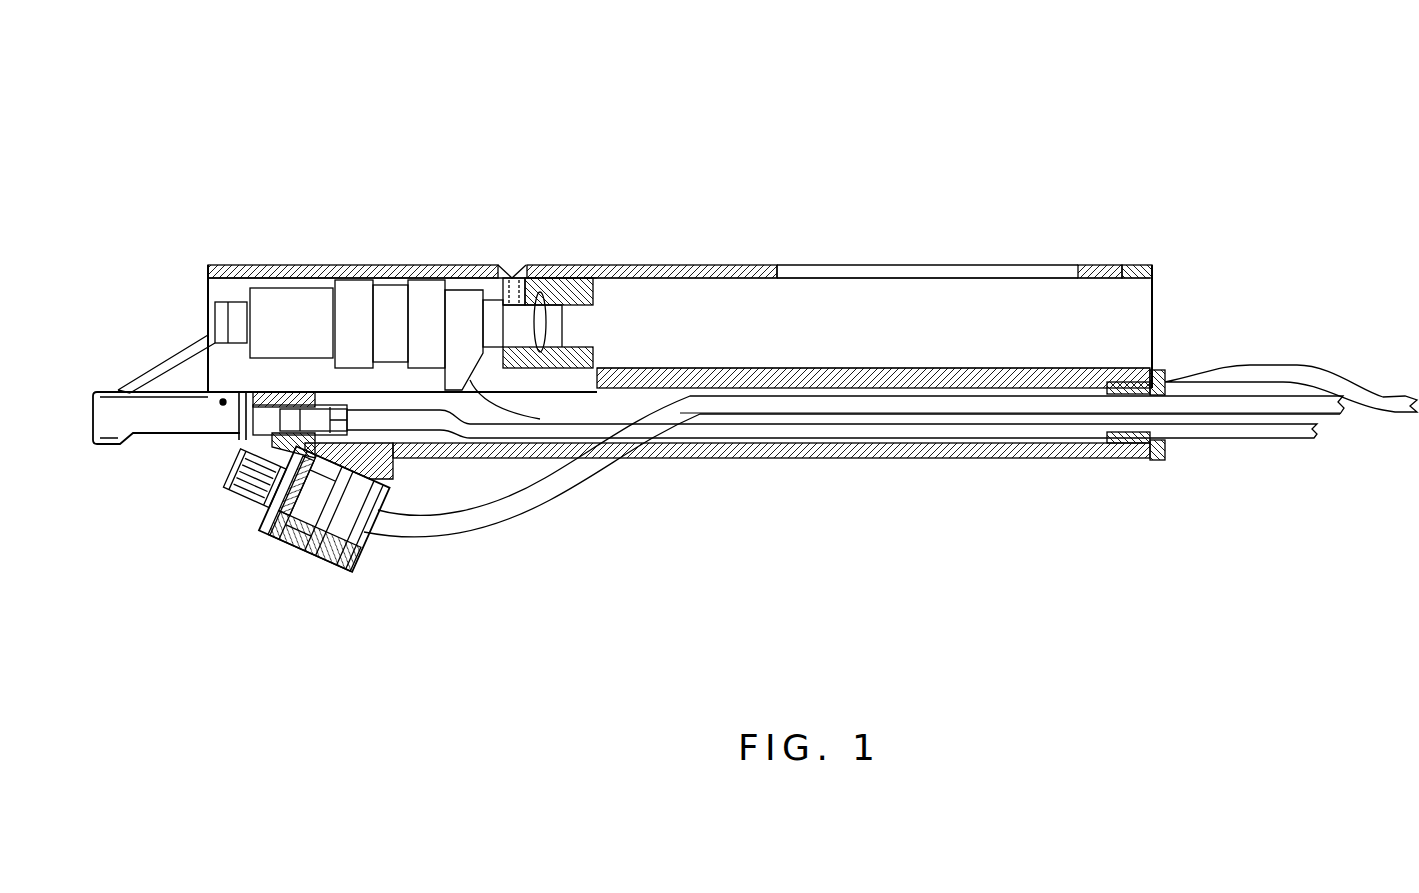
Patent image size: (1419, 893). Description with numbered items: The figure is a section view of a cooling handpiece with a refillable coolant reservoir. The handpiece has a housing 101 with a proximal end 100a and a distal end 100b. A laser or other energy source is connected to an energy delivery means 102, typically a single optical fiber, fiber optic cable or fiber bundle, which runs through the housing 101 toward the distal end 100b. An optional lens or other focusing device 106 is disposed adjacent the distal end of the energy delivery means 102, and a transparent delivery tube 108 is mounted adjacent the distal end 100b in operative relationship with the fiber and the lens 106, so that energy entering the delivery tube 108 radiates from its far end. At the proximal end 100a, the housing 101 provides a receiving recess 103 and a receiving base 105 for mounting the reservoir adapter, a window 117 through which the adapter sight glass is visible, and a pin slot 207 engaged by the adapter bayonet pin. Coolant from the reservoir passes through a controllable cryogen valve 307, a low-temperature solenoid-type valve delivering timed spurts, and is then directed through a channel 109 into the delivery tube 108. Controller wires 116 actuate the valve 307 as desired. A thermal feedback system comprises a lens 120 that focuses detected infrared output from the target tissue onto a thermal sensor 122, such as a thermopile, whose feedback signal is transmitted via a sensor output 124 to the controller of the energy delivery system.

The proximal end 100a is at (1156, 237).
The distal end 100b is at (232, 248).
The housing 101 is at (283, 272).
The energy delivery means 102 is at (770, 430).
The receiving recess 103 is at (743, 323).
The receiving base 105 is at (572, 292).
The focusing lens 106 is at (270, 417).
The delivery tube 108 is at (170, 445).
The channel 109 is at (173, 352).
The controller wires 116 is at (538, 426).
The window 117 is at (972, 262).
The lens 120 is at (232, 458).
The thermal sensor 122 is at (323, 507).
The sensor output 124 is at (478, 517).
The pin slot 207 is at (1153, 278).
The cryogen valve 307 is at (376, 335).